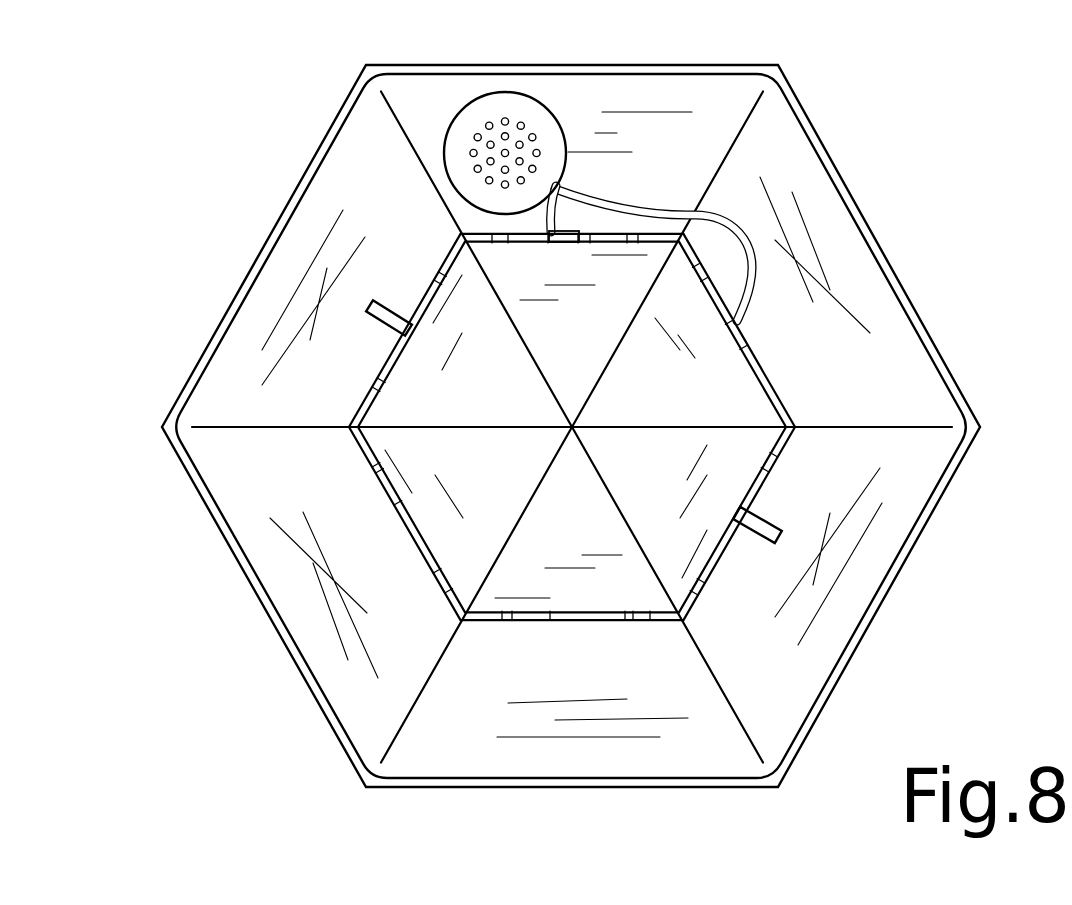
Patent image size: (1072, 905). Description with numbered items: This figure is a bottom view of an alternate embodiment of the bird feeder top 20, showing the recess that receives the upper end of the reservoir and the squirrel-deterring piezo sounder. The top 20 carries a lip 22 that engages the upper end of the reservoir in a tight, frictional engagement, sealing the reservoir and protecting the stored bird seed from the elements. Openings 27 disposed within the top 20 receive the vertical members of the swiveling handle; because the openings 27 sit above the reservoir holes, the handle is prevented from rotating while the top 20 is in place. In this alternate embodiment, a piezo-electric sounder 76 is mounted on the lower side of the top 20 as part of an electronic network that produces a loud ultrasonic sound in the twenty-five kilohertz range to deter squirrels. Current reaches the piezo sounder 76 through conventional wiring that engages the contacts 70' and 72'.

The top 20 is at (859, 214).
The lip 22 is at (580, 624).
The openings 27 is at (765, 525).
The contact 70' is at (688, 269).
The contact 72' is at (538, 239).
The piezo-electric sounder 76 is at (509, 94).